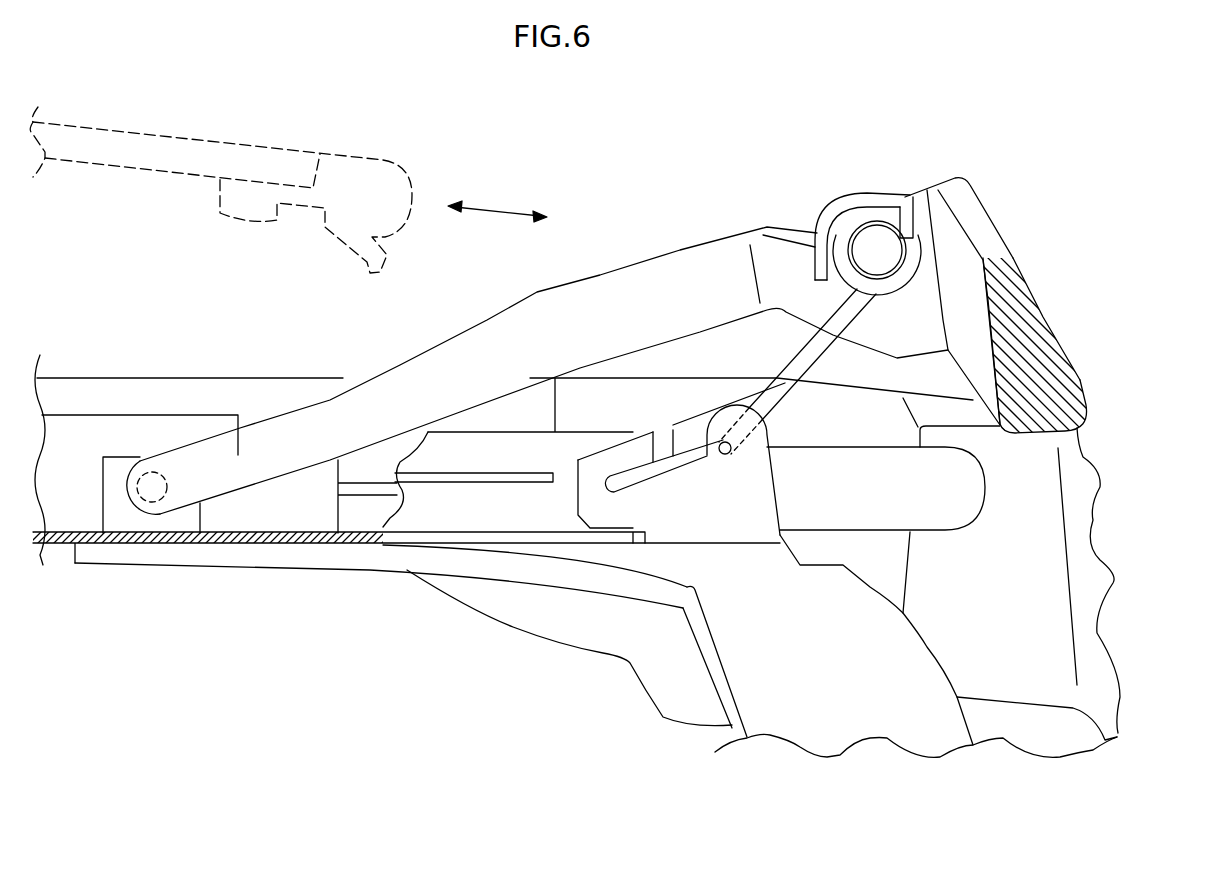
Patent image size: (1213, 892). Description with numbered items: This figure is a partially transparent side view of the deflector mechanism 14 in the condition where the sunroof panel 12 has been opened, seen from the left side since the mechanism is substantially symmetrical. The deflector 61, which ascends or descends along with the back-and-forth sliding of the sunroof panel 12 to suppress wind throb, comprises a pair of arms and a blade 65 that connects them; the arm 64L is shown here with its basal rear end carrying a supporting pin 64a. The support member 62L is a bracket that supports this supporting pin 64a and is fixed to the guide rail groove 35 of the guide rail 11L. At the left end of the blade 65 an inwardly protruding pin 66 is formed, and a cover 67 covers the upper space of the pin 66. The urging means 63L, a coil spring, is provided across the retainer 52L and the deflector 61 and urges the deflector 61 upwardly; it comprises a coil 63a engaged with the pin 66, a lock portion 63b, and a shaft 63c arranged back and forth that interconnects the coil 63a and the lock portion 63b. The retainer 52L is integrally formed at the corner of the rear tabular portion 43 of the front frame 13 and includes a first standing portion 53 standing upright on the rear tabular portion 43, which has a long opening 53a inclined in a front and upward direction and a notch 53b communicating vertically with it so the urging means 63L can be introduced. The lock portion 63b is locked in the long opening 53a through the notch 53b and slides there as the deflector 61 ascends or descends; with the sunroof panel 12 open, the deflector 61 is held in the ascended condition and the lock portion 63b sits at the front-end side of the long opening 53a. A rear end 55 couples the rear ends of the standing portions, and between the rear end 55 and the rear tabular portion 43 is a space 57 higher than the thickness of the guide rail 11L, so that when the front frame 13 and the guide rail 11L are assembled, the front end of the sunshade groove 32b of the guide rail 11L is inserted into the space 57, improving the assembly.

The sunroof panel 12 is at (247, 143).
The deflector mechanism 14 is at (990, 157).
The deflector 61 is at (1077, 362).
The blade 65 is at (1005, 225).
The pin 66 is at (883, 253).
The cover 67 is at (817, 228).
The urging means 63L is at (843, 215).
The coil 63a is at (897, 200).
The lock portion 63b is at (727, 441).
The shaft 63c is at (820, 363).
The arm 64L is at (650, 257).
The supporting pin 64a is at (147, 502).
The support member 62L is at (128, 415).
The guide rail groove 35 is at (230, 518).
The sunshade groove 32b is at (400, 525).
The guide rail 11L is at (527, 545).
The space 57 is at (638, 543).
The retainer 52L is at (683, 525).
The first standing portion 53 is at (757, 528).
The long opening 53a is at (707, 453).
The notch 53b is at (663, 443).
The rear end 55 is at (578, 503).
The rear tabular portion 43 is at (822, 689).
The front frame 13 is at (888, 738).